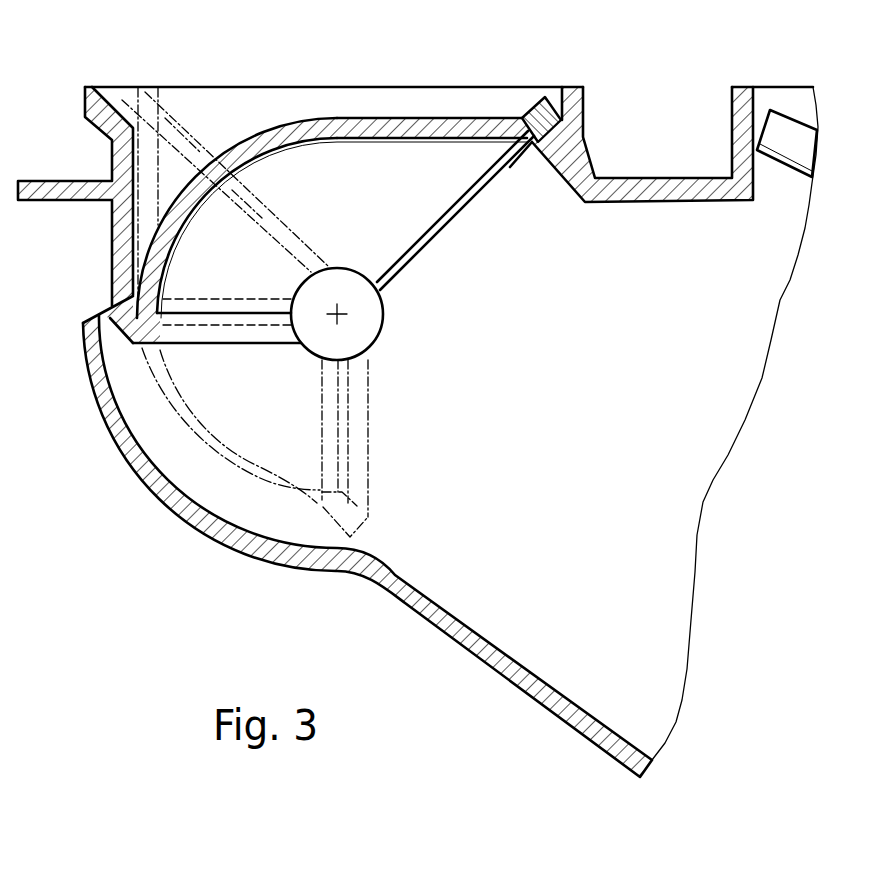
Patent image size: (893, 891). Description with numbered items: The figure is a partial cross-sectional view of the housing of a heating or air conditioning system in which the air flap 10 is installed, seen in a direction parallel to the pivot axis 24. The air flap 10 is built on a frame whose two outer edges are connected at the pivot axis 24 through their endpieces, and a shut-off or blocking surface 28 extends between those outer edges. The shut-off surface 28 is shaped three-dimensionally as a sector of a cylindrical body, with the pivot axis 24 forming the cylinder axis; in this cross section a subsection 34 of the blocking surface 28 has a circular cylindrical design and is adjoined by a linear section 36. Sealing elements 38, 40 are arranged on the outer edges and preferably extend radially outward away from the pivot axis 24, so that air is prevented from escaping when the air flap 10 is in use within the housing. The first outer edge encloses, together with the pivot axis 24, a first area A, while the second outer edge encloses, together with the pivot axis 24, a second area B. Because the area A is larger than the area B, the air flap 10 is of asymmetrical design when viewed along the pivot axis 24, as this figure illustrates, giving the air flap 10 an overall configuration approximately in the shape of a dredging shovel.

The air flap 10 is at (430, 252).
The pivot axis 24 is at (337, 314).
The shut-off surface 28 is at (236, 132).
The subsection 34 is at (183, 197).
The linear section 36 is at (372, 130).
The sealing element 38 is at (547, 113).
The sealing element 40 is at (90, 373).
The first area A is at (468, 207).
The second area B is at (222, 335).